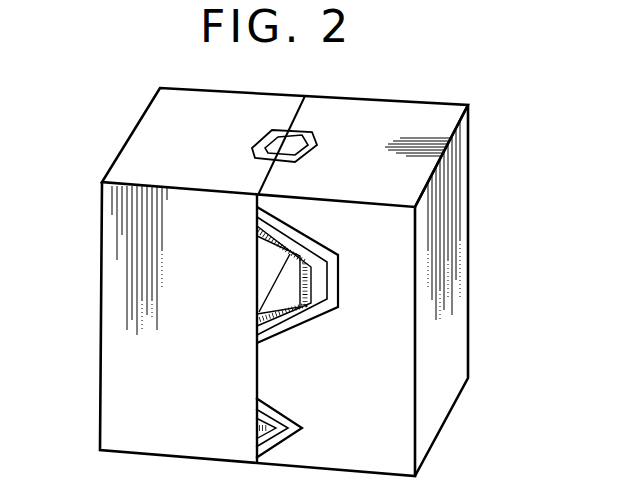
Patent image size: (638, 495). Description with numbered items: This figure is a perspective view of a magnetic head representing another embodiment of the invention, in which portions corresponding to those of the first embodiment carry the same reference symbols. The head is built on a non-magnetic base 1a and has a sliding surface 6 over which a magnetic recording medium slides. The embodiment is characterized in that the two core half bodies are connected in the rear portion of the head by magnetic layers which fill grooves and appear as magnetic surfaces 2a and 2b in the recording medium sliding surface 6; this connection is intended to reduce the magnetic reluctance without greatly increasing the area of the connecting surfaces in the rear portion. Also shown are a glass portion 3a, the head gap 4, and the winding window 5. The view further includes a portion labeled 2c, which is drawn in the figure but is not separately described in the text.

The sliding surface 6 is at (410, 131).
The non-magnetic base 1a is at (462, 237).
The magnetic layer 2a is at (300, 153).
The magnetic layer 2b is at (258, 152).
The outer layer 2c is at (270, 134).
The glass portion 3a is at (297, 312).
The head gap 4 is at (312, 136).
The winding window 5 is at (268, 258).